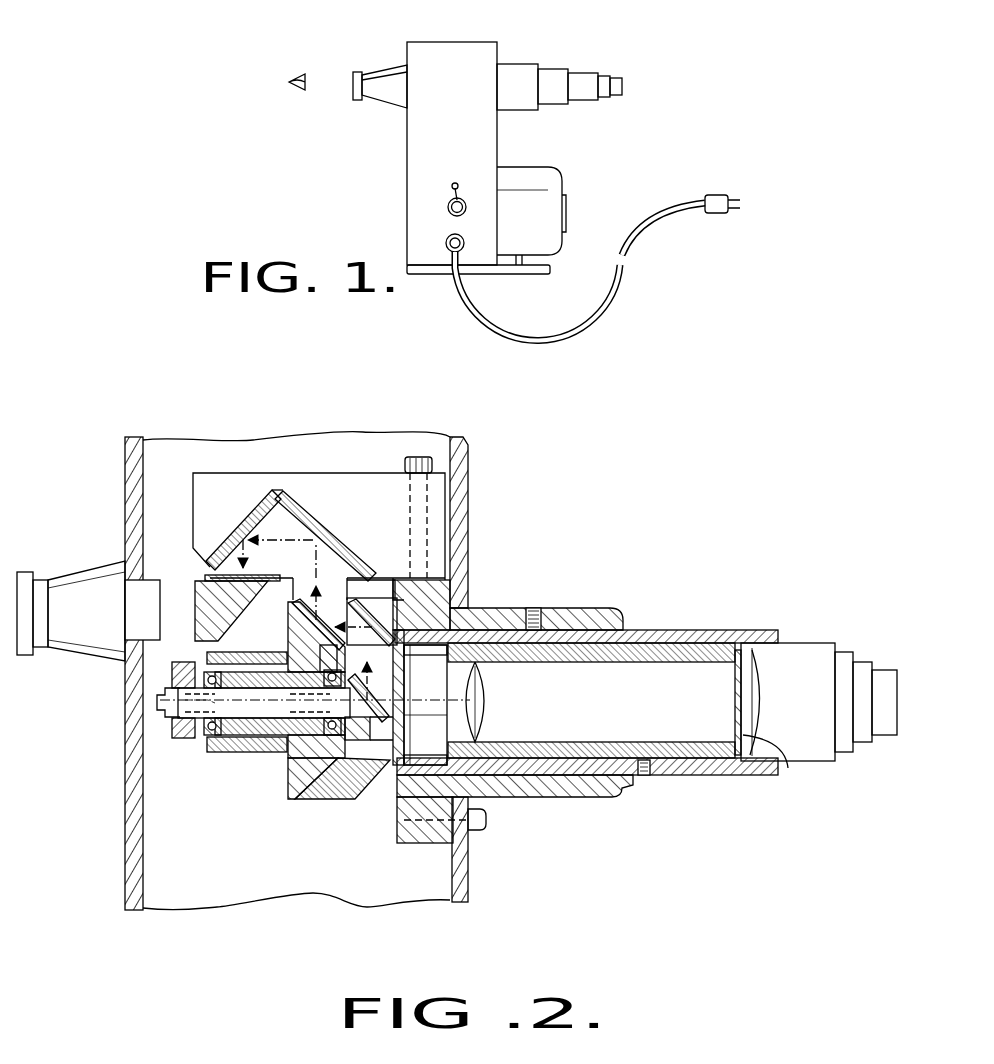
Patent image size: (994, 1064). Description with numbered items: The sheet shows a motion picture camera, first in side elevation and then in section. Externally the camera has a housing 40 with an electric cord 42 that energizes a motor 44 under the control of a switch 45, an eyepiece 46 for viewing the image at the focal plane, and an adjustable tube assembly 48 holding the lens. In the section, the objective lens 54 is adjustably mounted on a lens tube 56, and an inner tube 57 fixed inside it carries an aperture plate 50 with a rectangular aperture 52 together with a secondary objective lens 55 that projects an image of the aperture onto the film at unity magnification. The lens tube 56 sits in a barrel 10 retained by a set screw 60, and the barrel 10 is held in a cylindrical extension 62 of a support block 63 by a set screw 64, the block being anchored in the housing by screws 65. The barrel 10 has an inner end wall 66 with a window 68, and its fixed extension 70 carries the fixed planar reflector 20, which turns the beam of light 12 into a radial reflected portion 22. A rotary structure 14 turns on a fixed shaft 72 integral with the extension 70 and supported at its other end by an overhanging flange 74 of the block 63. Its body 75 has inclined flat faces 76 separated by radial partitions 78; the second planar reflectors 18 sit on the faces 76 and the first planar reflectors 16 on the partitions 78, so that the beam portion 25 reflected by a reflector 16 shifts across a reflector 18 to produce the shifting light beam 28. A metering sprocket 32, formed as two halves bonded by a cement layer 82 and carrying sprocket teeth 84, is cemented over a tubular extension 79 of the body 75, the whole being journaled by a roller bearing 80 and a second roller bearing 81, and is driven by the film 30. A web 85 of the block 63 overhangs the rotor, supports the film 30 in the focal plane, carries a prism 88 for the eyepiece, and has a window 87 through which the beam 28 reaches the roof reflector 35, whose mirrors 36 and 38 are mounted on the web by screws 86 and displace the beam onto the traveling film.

In FIG. 2, the barrel 10 is at (735, 643).
In FIG. 2, the beam of light 12 is at (418, 700).
In FIG. 2, the rotary structure 14 is at (287, 783).
In FIG. 2, the first planar reflector 16 is at (342, 582).
In FIG. 2, the second planar reflector 18 is at (312, 600).
In FIG. 2, the fixed planar reflector 20 is at (406, 736).
In FIG. 2, the reflected portion of the beam 22 is at (380, 676).
In FIG. 2, the beam portion reflected by first reflector 25 is at (356, 616).
In FIG. 2, the shifting light beam 28 is at (330, 568).
In FIG. 2, the film 30 is at (235, 572).
In FIG. 2, the metering sprocket 32 is at (212, 764).
In FIG. 2, the roof reflector 35 is at (303, 466).
In FIG. 2, the first mirror of roof reflector 36 is at (292, 518).
In FIG. 2, the second mirror of roof reflector 38 is at (266, 520).
In FIG. 1, the housing 40 is at (416, 164).
In FIG. 2, the housing 40 is at (473, 460).
In FIG. 1, the electric cord 42 is at (636, 224).
In FIG. 1, the motor 44 is at (545, 173).
In FIG. 1, the switch 45 is at (462, 192).
In FIG. 1, the eyepiece 46 is at (378, 68).
In FIG. 2, the eyepiece 46 is at (93, 578).
In FIG. 1, the adjustable tube assembly 48 is at (563, 61).
In FIG. 2, the adjustable tube assembly 48 is at (674, 628).
In FIG. 2, the aperture plate 50 is at (788, 768).
In FIG. 2, the rectangular aperture 52 is at (747, 680).
In FIG. 2, the objective lens 54 is at (885, 737).
In FIG. 2, the secondary objective lens 55 is at (483, 702).
In FIG. 2, the lens tube 56 is at (688, 760).
In FIG. 2, the inner tube 57 is at (608, 663).
In FIG. 2, the set screw 60 is at (645, 778).
In FIG. 2, the cylindrical extension 62 is at (603, 607).
In FIG. 2, the support block 63 is at (446, 588).
In FIG. 2, the set screw 64 is at (538, 607).
In FIG. 2, the screws 65 is at (488, 822).
In FIG. 2, the inner end wall 66 is at (406, 662).
In FIG. 2, the window 68 is at (406, 716).
In FIG. 2, the fixed extension 70 is at (362, 763).
In FIG. 2, the fixed shaft 72 is at (201, 733).
In FIG. 2, the overhanging flange 74 is at (182, 736).
In FIG. 2, the body 75 is at (300, 800).
In FIG. 2, the inclined flat faces 76 is at (301, 619).
In FIG. 2, the radial partitions 78 is at (340, 800).
In FIG. 2, the tubular extension 79 is at (260, 654).
In FIG. 2, the roller bearing 80 is at (334, 660).
In FIG. 2, the second roller bearing 81 is at (240, 652).
In FIG. 2, the cement layer 82 is at (250, 752).
In FIG. 2, the sprocket teeth 84 is at (195, 669).
In FIG. 2, the web 85 is at (393, 582).
In FIG. 2, the screws 86 is at (418, 456).
In FIG. 2, the window 87 is at (352, 582).
In FIG. 2, the prism 88 is at (205, 582).